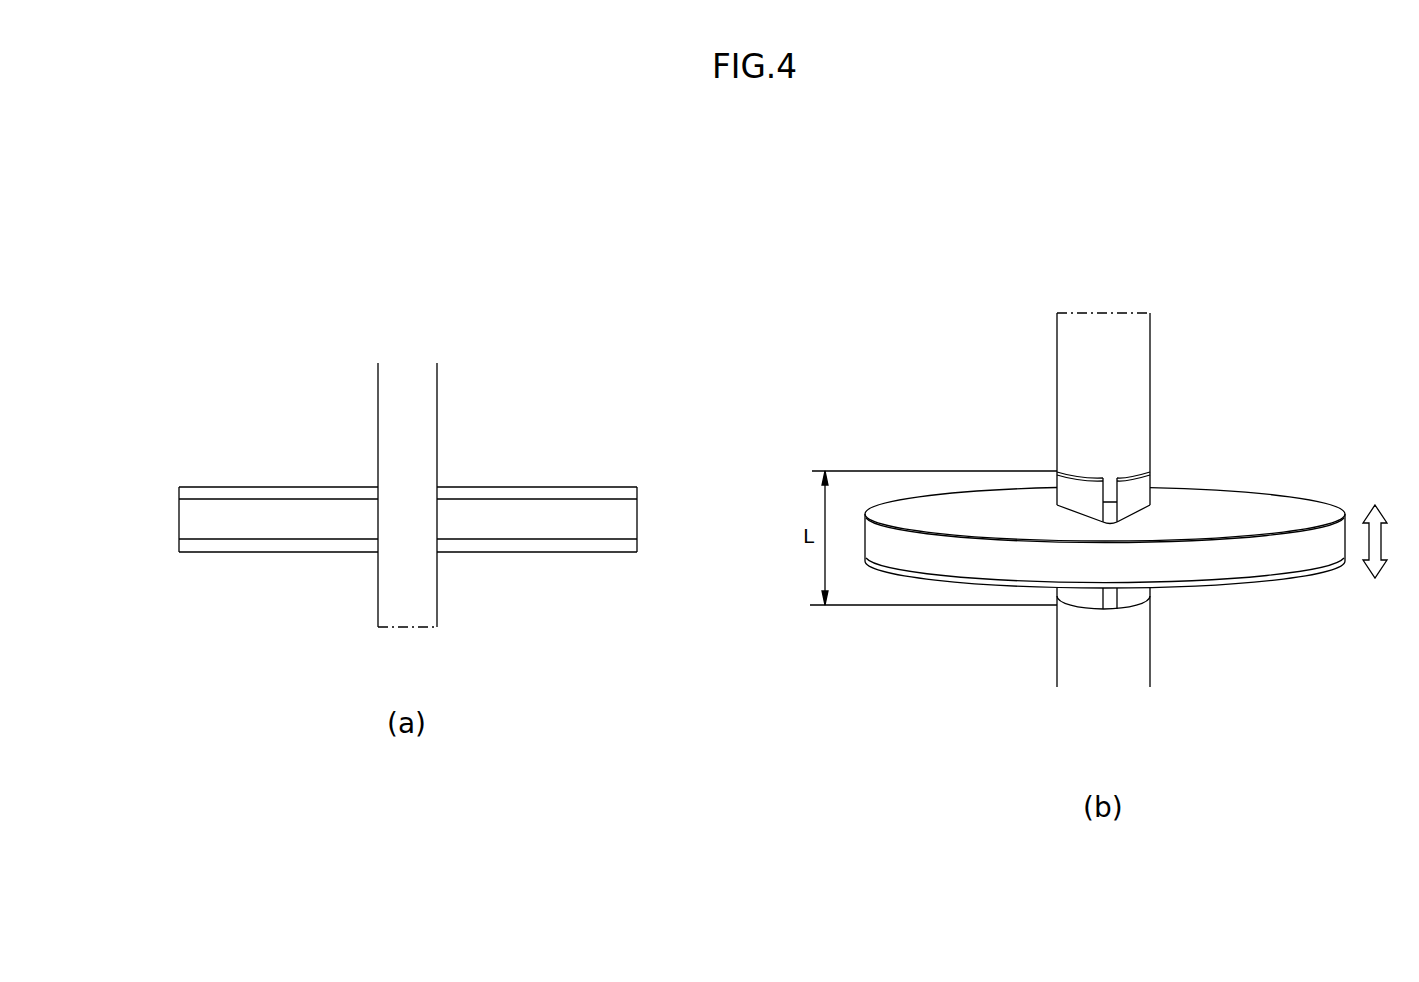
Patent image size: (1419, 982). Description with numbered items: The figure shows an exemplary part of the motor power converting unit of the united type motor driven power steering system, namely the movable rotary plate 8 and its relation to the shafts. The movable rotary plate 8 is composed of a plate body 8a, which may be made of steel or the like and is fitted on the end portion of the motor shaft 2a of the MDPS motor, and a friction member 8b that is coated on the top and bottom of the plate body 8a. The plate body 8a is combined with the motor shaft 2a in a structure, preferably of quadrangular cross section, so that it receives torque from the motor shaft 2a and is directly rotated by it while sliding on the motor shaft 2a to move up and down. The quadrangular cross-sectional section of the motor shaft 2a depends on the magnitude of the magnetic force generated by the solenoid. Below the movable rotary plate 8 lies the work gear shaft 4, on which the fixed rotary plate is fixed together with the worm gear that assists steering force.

The motor shaft 2a is at (423, 417).
The movable rotary plate 8 is at (783, 589).
The plate body 8a is at (208, 515).
The friction member 8b is at (330, 545).
The work gear shaft 4 is at (1108, 658).